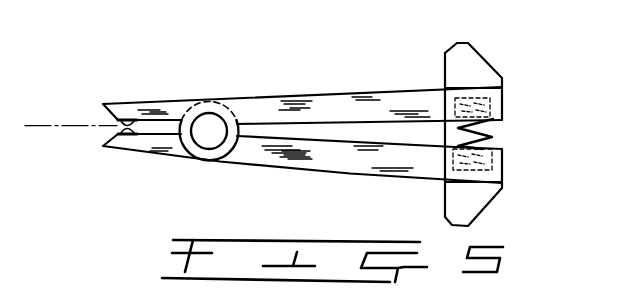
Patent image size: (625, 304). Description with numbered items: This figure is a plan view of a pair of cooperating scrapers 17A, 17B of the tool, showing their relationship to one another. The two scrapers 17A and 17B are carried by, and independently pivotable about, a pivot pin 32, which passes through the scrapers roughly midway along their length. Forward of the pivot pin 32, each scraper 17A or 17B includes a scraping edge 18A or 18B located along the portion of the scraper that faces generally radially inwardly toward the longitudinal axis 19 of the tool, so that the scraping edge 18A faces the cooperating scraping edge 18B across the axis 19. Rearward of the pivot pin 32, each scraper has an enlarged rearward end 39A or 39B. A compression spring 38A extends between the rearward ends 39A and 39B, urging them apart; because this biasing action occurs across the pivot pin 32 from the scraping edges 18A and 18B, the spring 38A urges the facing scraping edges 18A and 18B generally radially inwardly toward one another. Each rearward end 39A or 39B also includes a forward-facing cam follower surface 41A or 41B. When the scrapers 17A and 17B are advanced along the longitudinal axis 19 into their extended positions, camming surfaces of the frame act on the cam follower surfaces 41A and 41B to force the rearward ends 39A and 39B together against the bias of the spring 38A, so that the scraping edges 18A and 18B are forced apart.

The longitudinal axis 19 is at (70, 125).
The scraper 17A is at (290, 98).
The scraper 17B is at (330, 160).
The scraping edge 18A is at (135, 118).
The scraping edge 18B is at (135, 136).
The pivot pin 32 is at (207, 127).
The cam follower surface 41A is at (445, 54).
The cam follower surface 41B is at (445, 222).
The rearward end 39A is at (476, 70).
The rearward end 39B is at (483, 198).
The compression spring 38A is at (497, 128).